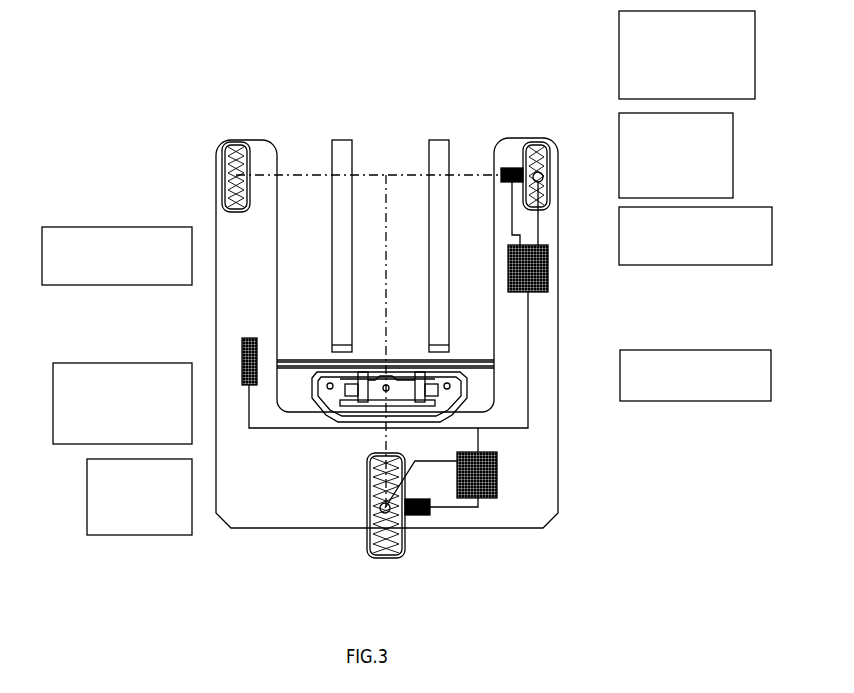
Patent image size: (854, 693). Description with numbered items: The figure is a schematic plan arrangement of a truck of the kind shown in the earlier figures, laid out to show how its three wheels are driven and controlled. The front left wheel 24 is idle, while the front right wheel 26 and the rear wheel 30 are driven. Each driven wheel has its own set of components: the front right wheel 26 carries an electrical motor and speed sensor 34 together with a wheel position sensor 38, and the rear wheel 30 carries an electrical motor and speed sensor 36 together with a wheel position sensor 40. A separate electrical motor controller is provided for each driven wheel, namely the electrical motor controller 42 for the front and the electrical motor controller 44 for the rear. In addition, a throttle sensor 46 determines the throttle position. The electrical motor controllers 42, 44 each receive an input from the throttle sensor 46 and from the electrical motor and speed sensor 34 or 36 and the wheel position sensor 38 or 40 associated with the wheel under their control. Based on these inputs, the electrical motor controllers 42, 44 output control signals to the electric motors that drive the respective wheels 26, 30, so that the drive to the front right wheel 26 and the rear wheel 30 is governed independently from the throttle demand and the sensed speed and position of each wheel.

The front left wheel 24 is at (233, 170).
The front right wheel 26 is at (552, 185).
The rear wheel 30 is at (410, 545).
The electrical motor and speed sensor 34 is at (523, 155).
The electrical motor and speed sensor 36 is at (418, 491).
The wheel position sensor 38 is at (551, 160).
The wheel position sensor 40 is at (369, 498).
The electrical motor controller 42 is at (565, 266).
The electrical motor controller 44 is at (510, 467).
The throttle sensor 46 is at (233, 330).